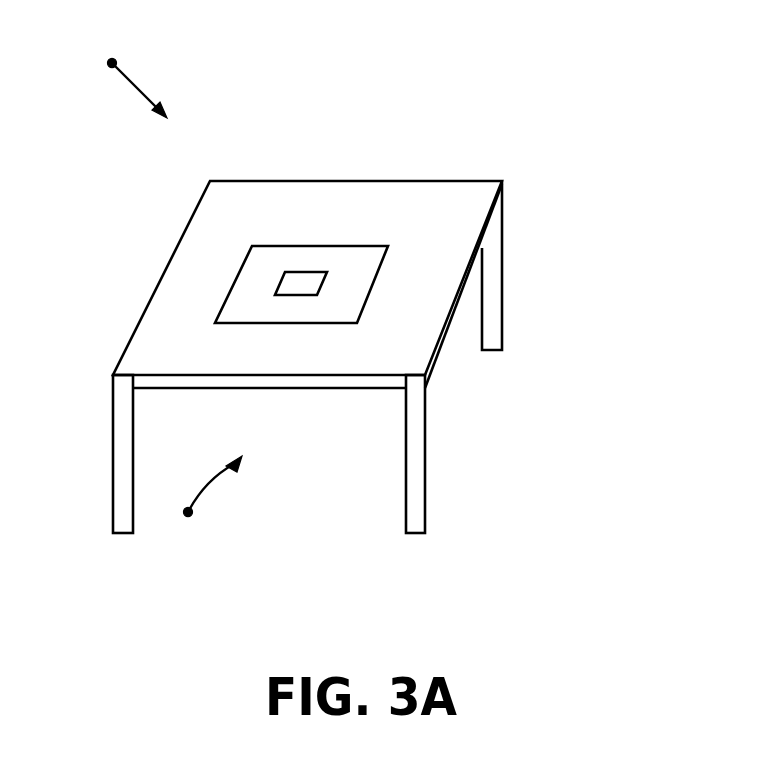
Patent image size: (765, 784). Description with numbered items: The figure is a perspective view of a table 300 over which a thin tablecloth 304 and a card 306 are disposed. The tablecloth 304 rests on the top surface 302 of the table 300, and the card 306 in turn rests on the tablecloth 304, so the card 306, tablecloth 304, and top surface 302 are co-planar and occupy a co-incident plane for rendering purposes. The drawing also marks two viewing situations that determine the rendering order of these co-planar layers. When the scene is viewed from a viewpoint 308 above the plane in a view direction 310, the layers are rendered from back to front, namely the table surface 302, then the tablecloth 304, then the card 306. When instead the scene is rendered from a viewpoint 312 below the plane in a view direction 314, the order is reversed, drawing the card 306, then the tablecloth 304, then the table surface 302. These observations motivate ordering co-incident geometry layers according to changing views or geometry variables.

The table 300 is at (465, 55).
The top surface 302 is at (470, 192).
The tablecloth 304 is at (362, 255).
The card 306 is at (312, 277).
The viewpoint 308 is at (112, 63).
The view direction 310 is at (145, 103).
The viewpoint 312 is at (186, 516).
The view direction 314 is at (217, 485).